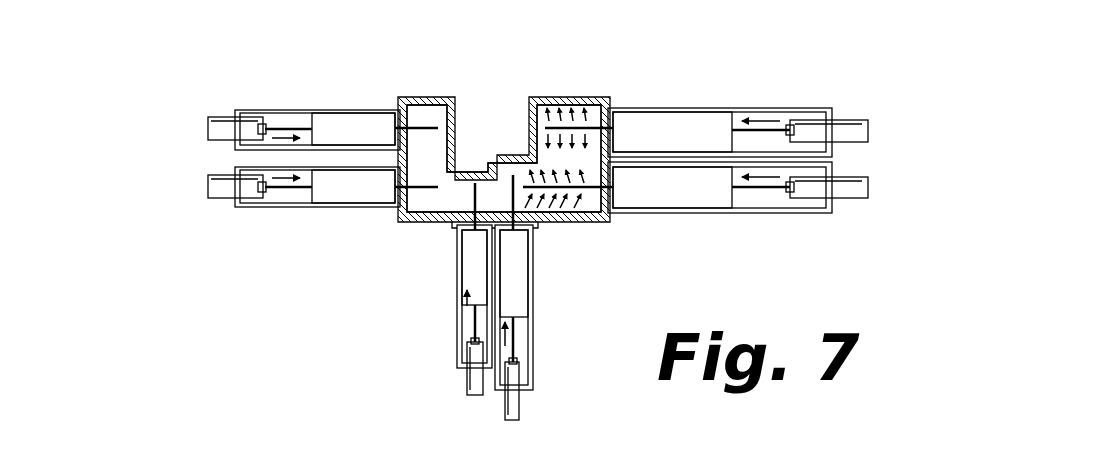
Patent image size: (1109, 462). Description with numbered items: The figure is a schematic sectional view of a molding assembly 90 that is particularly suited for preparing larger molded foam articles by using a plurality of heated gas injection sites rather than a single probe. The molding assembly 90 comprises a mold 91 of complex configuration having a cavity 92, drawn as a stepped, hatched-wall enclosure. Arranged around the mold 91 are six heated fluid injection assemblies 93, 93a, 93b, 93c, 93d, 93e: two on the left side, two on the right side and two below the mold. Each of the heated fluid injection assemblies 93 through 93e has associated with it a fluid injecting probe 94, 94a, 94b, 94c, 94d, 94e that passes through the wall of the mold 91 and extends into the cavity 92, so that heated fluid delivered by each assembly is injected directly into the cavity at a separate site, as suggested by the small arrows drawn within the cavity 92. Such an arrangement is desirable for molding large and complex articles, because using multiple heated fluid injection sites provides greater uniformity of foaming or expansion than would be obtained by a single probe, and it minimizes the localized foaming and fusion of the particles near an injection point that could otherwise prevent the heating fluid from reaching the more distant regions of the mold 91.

The molding assembly 90 is at (538, 74).
The mold 91 is at (417, 128).
The cavity 92 is at (537, 140).
The heated fluid injection assembly 93 is at (342, 122).
The heated fluid injection assembly 93a is at (343, 192).
The heated fluid injection assembly 93b is at (468, 276).
The heated fluid injection assembly 93c is at (520, 286).
The heated fluid injection assembly 93d is at (808, 213).
The heated fluid injection assembly 93e is at (787, 108).
The fluid injecting probe 94 is at (401, 98).
The fluid injecting probe 94a is at (403, 207).
The fluid injecting probe 94b is at (472, 192).
The fluid injecting probe 94c is at (545, 214).
The fluid injecting probe 94d is at (608, 217).
The fluid injecting probe 94e is at (580, 108).